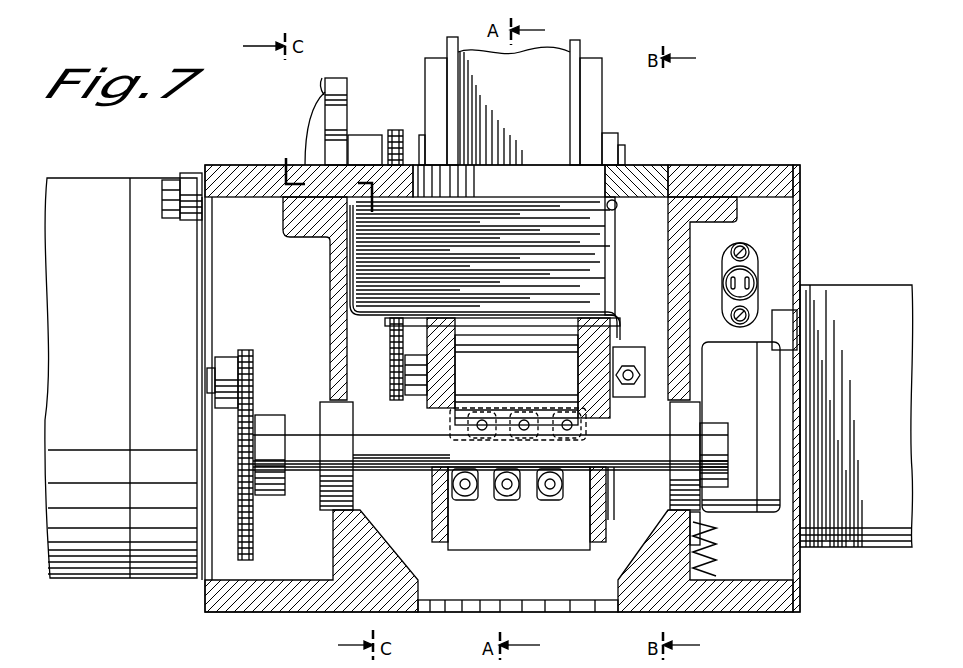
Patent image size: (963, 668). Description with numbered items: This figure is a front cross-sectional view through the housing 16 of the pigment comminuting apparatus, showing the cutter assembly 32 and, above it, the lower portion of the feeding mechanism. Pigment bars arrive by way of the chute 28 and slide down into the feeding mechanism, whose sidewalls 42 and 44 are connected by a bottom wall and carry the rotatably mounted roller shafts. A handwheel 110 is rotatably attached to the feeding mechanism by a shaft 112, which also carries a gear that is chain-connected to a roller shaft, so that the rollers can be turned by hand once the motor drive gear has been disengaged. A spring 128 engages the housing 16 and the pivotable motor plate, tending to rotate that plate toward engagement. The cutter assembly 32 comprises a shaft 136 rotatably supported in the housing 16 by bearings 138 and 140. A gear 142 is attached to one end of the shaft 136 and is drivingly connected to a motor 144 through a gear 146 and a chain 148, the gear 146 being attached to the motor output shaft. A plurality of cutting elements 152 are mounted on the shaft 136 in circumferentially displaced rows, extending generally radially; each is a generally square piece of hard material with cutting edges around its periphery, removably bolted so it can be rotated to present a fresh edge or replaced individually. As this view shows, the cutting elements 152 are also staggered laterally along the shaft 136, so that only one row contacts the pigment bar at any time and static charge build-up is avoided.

The housing 16 is at (762, 165).
The chute 28 is at (540, 80).
The cutter assembly 32 is at (490, 505).
The sidewall 42 is at (432, 96).
The sidewall 44 is at (600, 120).
The handwheel 110 is at (306, 146).
The shaft 112 is at (640, 147).
The spring 128 is at (700, 546).
The shaft 136 is at (637, 460).
The bearing 138 is at (322, 400).
The bearing 140 is at (698, 443).
The gear 142 is at (243, 545).
The motor 144 is at (73, 565).
The gear 146 is at (222, 357).
The chain 148 is at (244, 380).
The cutting elements 152 is at (565, 412).